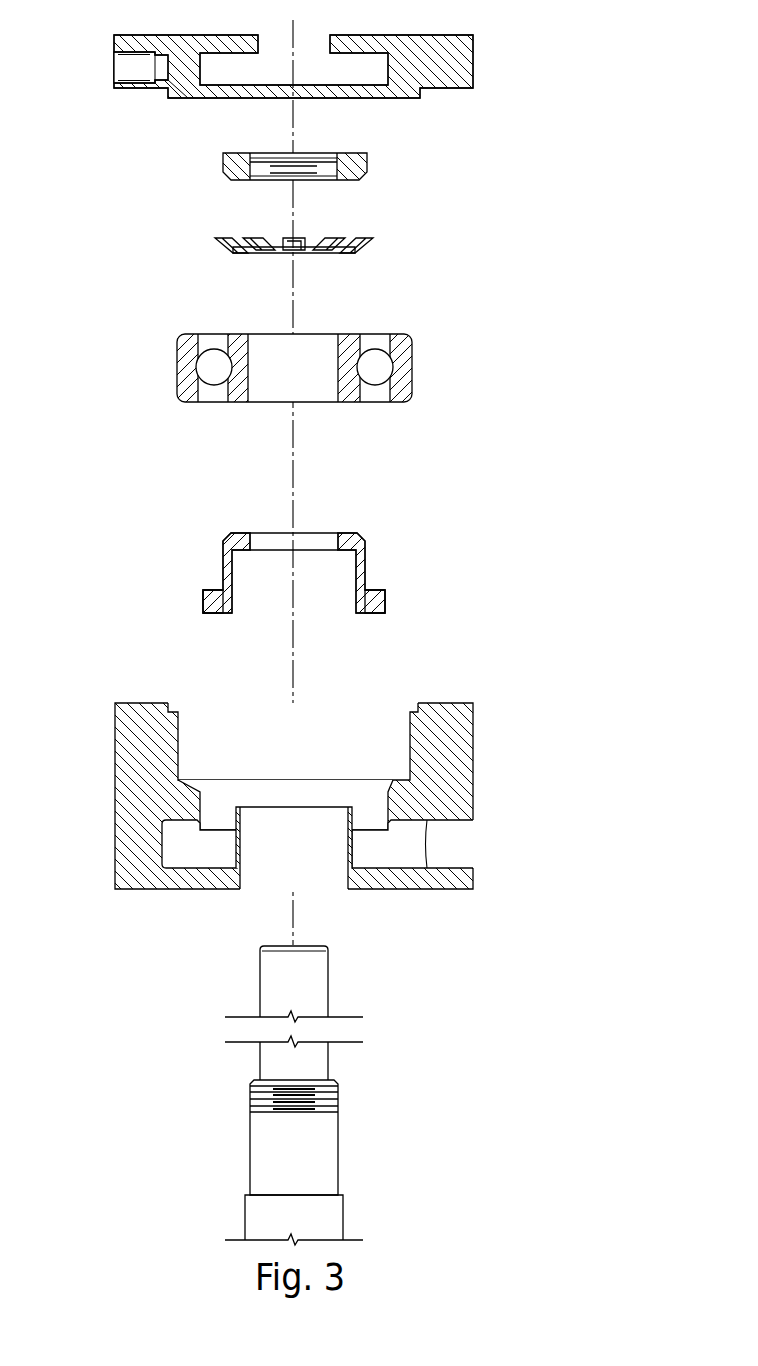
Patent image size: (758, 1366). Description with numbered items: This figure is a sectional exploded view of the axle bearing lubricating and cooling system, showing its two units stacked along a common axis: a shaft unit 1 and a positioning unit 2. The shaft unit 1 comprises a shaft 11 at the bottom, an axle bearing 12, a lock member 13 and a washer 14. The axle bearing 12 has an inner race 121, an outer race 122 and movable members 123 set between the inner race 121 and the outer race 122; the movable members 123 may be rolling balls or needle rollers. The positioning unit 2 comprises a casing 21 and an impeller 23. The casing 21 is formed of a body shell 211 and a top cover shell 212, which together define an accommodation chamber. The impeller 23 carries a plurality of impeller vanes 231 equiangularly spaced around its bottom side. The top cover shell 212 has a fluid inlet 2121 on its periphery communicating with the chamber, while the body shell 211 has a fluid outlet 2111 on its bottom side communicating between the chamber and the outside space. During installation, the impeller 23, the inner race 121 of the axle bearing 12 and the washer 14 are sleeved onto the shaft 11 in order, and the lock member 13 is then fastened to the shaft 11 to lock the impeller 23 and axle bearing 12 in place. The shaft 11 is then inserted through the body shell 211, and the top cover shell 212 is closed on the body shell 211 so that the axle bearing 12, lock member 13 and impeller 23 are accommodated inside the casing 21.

The shaft unit 1 is at (336, 1095).
The shaft 11 is at (335, 1147).
The axle bearing 12 is at (256, 382).
The inner race 121 is at (238, 396).
The outer race 122 is at (187, 392).
The movable members 123 is at (210, 365).
The lock member 13 is at (228, 168).
The washer 14 is at (222, 243).
The positioning unit 2 is at (310, 462).
The casing 21 is at (350, 793).
The body shell 211 is at (470, 772).
The fluid outlet 2111 is at (468, 843).
The top cover shell 212 is at (301, 80).
The fluid inlet 2121 is at (122, 67).
The impeller 23 is at (253, 588).
The impeller vanes 231 is at (210, 605).